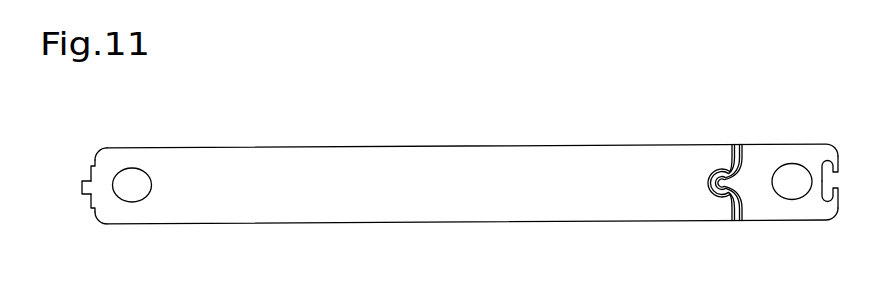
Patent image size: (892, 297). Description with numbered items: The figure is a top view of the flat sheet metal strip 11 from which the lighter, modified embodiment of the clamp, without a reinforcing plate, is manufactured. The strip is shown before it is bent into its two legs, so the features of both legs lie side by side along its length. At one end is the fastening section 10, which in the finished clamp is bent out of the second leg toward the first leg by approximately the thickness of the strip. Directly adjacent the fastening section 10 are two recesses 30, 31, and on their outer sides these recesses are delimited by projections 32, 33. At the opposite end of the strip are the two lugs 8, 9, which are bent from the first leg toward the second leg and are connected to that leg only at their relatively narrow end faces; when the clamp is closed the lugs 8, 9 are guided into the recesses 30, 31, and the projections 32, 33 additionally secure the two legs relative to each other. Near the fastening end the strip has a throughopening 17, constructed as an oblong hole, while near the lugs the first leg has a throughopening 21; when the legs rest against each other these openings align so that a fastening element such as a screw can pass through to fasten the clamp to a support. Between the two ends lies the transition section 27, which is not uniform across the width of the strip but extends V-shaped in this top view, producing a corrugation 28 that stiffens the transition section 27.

The lug 8 is at (838, 191).
The lug 9 is at (837, 172).
The fastening section 10 is at (82, 184).
The sheet metal strip 11 is at (511, 213).
The throughopening 17 is at (129, 189).
The throughopening 21 is at (796, 184).
The transition section 27 is at (735, 227).
The corrugation 28 is at (724, 180).
The recess 30 is at (91, 168).
The recess 31 is at (90, 200).
The projection 32 is at (93, 163).
The projection 33 is at (92, 209).